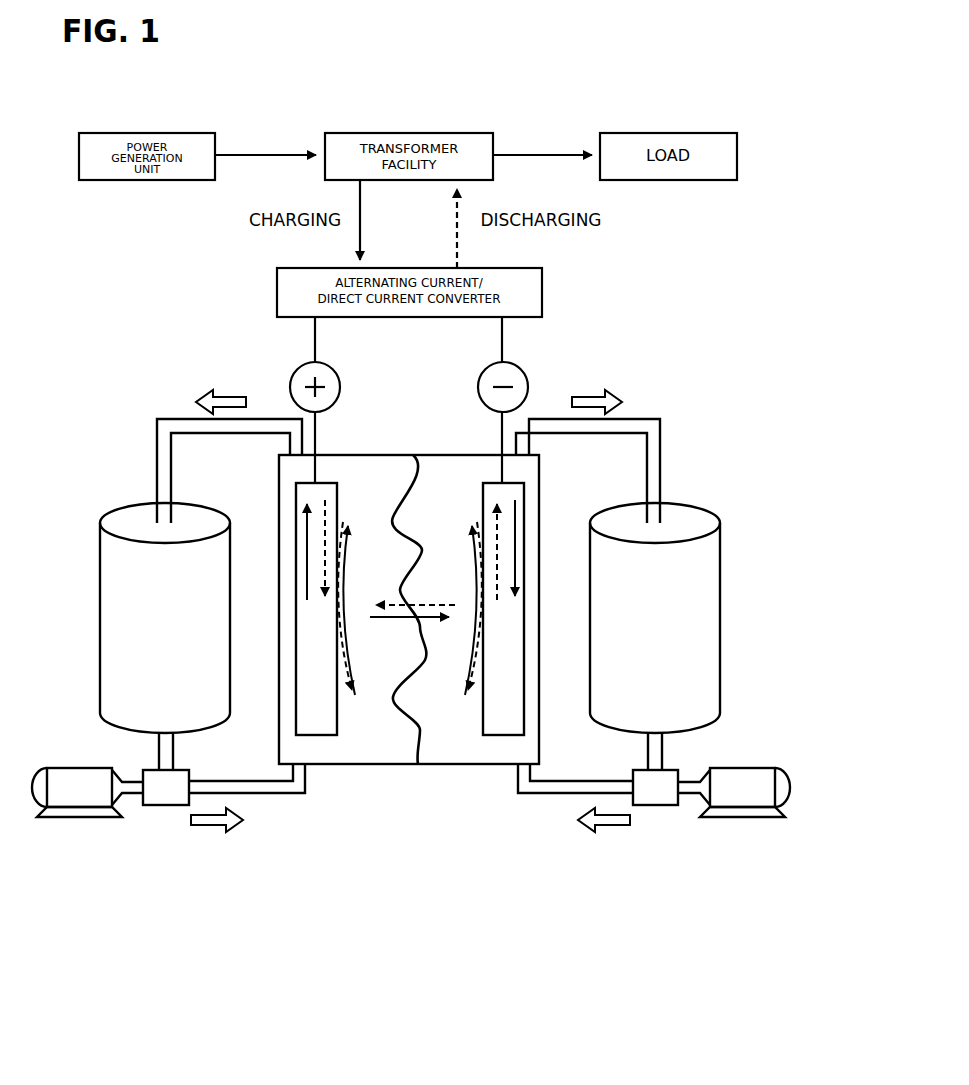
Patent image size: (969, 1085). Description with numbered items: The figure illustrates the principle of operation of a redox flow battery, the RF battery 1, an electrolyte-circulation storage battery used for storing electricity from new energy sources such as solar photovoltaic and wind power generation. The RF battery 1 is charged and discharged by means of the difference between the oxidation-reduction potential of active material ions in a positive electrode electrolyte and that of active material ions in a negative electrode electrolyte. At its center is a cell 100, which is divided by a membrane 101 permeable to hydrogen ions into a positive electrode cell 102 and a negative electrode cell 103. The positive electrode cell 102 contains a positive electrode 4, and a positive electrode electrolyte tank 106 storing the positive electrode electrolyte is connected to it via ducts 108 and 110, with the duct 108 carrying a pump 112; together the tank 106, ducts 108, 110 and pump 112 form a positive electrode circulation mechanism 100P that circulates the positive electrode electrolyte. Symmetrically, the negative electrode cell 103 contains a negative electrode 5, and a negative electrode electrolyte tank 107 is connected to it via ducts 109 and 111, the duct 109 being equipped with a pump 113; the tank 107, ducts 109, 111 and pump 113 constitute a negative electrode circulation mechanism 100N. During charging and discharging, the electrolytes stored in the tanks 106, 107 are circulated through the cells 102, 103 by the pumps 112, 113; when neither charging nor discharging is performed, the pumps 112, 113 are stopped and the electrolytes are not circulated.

The RF battery 1 is at (735, 296).
The positive electrode 4 is at (290, 626).
The negative electrode 5 is at (534, 626).
The cell 100 is at (414, 685).
The membrane 101 is at (410, 657).
The positive electrode cell 102 is at (316, 666).
The negative electrode cell 103 is at (512, 666).
The positive electrode electrolyte tank 106 is at (159, 584).
The negative electrode electrolyte tank 107 is at (662, 584).
The duct 108 is at (247, 821).
The duct 109 is at (575, 821).
The duct 110 is at (223, 429).
The duct 111 is at (594, 429).
The pump 112 is at (80, 761).
The pump 113 is at (741, 761).
The positive electrode circulation mechanism 100P is at (161, 632).
The negative electrode circulation mechanism 100N is at (660, 632).